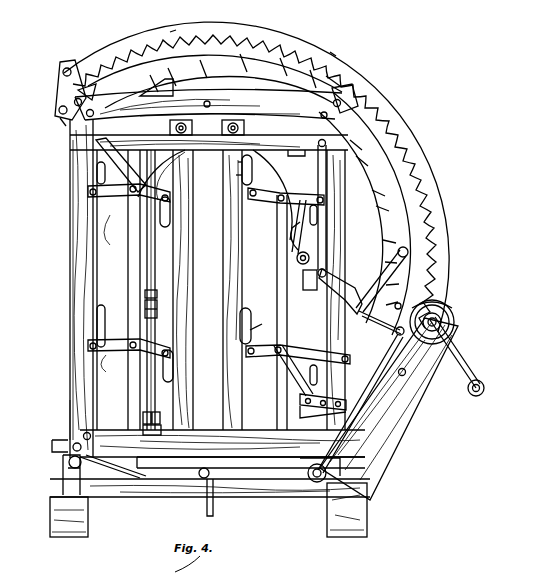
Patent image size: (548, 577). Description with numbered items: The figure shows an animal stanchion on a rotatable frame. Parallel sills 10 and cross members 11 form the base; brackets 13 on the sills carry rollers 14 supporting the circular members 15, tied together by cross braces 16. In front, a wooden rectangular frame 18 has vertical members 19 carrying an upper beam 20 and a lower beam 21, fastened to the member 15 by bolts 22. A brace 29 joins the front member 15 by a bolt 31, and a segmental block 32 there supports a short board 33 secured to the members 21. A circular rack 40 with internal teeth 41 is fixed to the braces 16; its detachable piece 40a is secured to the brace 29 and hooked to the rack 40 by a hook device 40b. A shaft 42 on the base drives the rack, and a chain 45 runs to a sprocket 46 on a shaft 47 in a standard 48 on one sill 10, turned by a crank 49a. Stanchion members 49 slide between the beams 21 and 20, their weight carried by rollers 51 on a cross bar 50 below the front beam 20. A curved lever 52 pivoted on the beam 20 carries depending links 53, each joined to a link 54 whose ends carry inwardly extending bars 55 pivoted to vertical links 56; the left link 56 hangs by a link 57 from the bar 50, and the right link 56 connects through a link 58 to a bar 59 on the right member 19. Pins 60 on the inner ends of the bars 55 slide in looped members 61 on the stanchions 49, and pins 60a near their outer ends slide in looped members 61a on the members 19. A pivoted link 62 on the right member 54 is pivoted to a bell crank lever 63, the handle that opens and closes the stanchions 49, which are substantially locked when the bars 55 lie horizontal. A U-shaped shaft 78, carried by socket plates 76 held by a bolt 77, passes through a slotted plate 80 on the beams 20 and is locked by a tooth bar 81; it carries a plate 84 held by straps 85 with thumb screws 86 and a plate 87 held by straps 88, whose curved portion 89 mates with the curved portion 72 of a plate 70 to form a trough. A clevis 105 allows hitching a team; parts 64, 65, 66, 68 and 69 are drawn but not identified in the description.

The sills 10 is at (52, 537).
The cross members 11 is at (160, 498).
The brackets 13 is at (62, 474).
The roller 14 is at (72, 450).
The circular members 15 is at (432, 278).
The cross braces 16 is at (395, 325).
The rectangular frame 18 is at (68, 425).
The members 19 is at (68, 284).
The beam 20 is at (360, 100).
The beam 21 is at (142, 428).
The bolts 22 is at (18, 457).
The brace 29 is at (56, 94).
The bolt 31 is at (62, 122).
The segmental block 32 is at (204, 498).
The short board 33 is at (246, 470).
The circular rack 40 is at (450, 247).
The detachable portion of rack bar 40a is at (173, 30).
The hook device 40b is at (336, 56).
The internal gear teeth 41 is at (432, 197).
The shaft 42 is at (316, 484).
The chain 45 is at (383, 348).
The sprocket 46 is at (456, 322).
The shaft 47 is at (446, 306).
The standard 48 is at (390, 470).
The stanchion members 49 is at (200, 360).
The crank 49a is at (485, 388).
The cross bar 50 is at (296, 159).
The rollers 51 is at (222, 128).
The curved lever 52 is at (244, 112).
The depending link 53 is at (90, 164).
The link 54 is at (78, 244).
The bars 55 is at (114, 199).
The vertically arranged link 56 is at (128, 271).
The link 57 is at (133, 171).
The link 58 is at (310, 384).
The bar 59 is at (314, 416).
The pins 60 is at (170, 196).
The pins 60a is at (100, 210).
The looped members 61 is at (252, 176).
The looped members 61a is at (95, 158).
The pivoted link 62 is at (352, 277).
The bell crank lever 63 is at (376, 304).
The rod 64 is at (318, 182).
The arm 65 is at (382, 279).
The pivot 66 is at (296, 261).
The bracket 68 is at (310, 280).
The link 69 is at (288, 241).
The plate 70 is at (258, 323).
The curved portion 72 is at (240, 166).
The socket plates 76 is at (161, 412).
The bolt 77 is at (140, 412).
The shaft 78 is at (180, 288).
The slotted plate 80 is at (150, 66).
The tooth bar 81 is at (170, 86).
The plate 84 is at (146, 390).
The straps 85 is at (159, 309).
The thumb screws 86 is at (144, 294).
The plate 87 is at (180, 266).
The straps 88 is at (148, 236).
The curved portion 89 is at (236, 180).
The clevis 105 is at (216, 512).